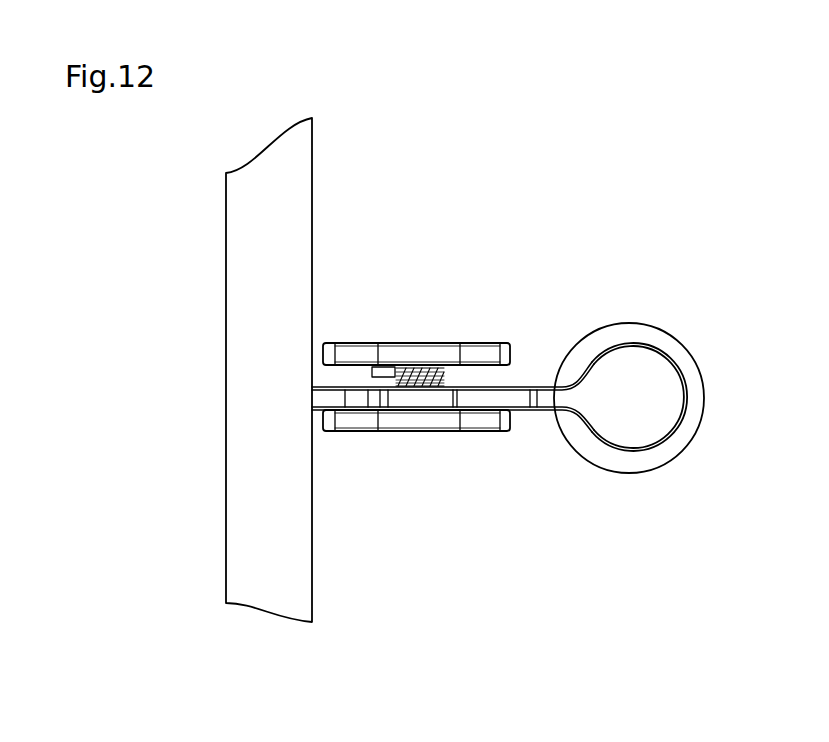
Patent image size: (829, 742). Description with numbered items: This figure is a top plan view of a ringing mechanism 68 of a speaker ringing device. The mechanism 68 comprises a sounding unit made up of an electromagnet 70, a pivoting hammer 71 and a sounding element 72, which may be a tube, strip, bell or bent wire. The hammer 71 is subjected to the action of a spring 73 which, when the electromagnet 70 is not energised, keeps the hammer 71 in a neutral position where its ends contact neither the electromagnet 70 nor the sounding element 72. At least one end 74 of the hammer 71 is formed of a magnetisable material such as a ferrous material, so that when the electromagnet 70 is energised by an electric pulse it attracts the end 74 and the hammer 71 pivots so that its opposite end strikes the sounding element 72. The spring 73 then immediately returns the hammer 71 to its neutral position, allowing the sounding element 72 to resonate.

The ringing mechanism 68 is at (508, 338).
The electromagnet 70 is at (625, 333).
The pivoting hammer 71 is at (518, 400).
The sounding element 72 is at (243, 358).
The spring 73 is at (417, 375).
The end of the hammer 74 is at (643, 430).